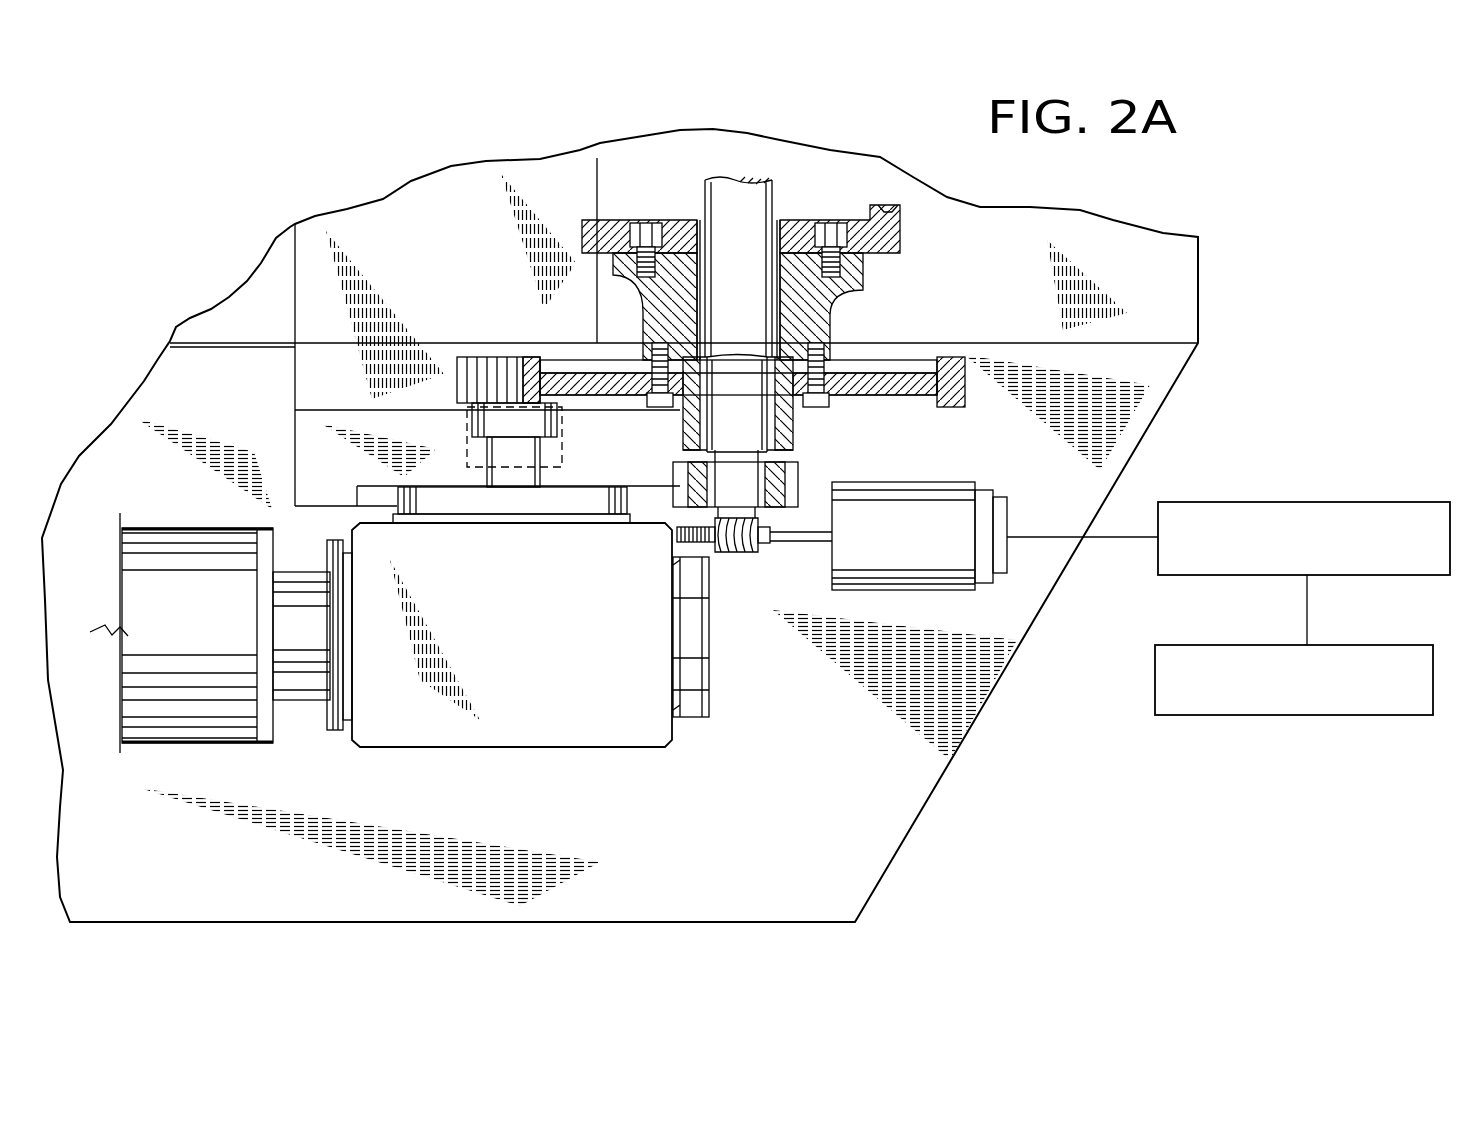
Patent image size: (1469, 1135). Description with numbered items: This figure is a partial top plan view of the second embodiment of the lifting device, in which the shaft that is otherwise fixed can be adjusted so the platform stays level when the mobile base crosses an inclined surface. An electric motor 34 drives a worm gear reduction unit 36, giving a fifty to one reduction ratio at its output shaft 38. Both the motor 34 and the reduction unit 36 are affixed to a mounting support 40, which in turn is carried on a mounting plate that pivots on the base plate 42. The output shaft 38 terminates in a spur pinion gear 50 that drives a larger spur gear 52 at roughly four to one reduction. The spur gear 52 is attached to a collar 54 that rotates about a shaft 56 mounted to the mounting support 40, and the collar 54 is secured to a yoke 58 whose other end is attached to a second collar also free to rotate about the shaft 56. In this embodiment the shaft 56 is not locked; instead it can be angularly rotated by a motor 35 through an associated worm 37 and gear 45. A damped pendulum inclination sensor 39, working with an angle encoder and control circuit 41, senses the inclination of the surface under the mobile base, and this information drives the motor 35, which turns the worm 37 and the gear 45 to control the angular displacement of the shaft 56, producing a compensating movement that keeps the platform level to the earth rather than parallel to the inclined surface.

The electric motor 34 is at (160, 538).
The motor 35 is at (947, 493).
The worm gear reduction unit 36 is at (385, 742).
The worm 37 is at (758, 550).
The output shaft 38 is at (537, 448).
The damped pendulum inclination sensor 39 is at (1230, 503).
The mounting support 40 is at (311, 440).
The angle encoder and control circuit 41 is at (1217, 645).
The base plate 42 is at (275, 902).
The gear 45 is at (678, 565).
The spur pinion gear 50 is at (479, 356).
The spur gear 52 is at (943, 347).
The collar 54 is at (650, 317).
The shaft 56 is at (708, 198).
The yoke 58 is at (902, 233).